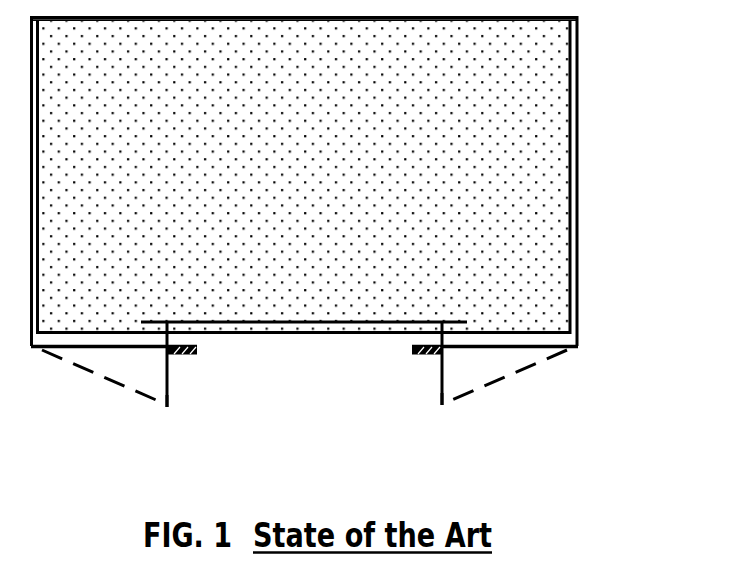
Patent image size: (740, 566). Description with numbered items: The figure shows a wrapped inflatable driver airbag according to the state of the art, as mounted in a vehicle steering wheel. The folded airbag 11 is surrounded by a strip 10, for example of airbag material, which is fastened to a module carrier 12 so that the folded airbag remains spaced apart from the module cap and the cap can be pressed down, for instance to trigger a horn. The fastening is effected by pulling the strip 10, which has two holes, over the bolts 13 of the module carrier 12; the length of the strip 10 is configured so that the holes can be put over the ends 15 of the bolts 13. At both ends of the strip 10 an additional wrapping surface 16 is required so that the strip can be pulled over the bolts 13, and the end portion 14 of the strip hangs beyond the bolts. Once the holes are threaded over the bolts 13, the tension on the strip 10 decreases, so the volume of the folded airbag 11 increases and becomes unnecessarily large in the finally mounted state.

The strip 10 is at (575, 273).
The folded airbag 11 is at (537, 137).
The module carrier 12 is at (290, 322).
The bolt 13 is at (168, 378).
The end portion 14 is at (117, 383).
The ends of bolts 15 is at (167, 407).
The additionally required wrapping surface 16 is at (183, 357).